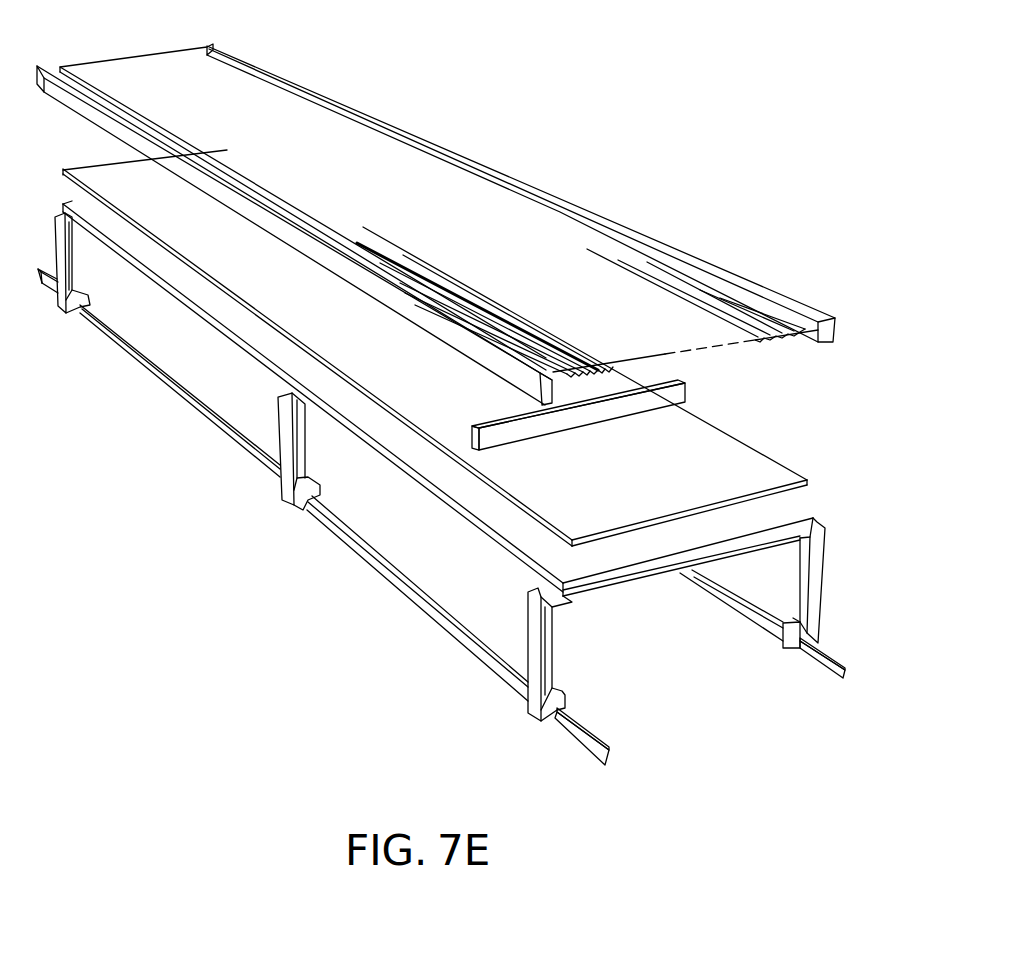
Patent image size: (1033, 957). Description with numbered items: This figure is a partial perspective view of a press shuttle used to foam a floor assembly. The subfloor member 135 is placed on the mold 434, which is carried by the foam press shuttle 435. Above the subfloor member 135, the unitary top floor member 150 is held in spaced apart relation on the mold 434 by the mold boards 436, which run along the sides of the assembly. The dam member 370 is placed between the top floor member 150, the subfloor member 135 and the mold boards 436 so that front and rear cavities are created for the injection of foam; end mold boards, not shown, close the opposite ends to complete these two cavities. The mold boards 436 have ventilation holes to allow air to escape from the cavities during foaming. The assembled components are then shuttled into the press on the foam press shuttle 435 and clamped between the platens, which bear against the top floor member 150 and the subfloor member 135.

The mold boards 436 is at (756, 287).
The unitary top floor member 150 is at (775, 338).
The subfloor member 135 is at (783, 470).
The dam member 370 is at (577, 420).
The mold 434 is at (788, 518).
The foam press shuttle 435 is at (388, 602).